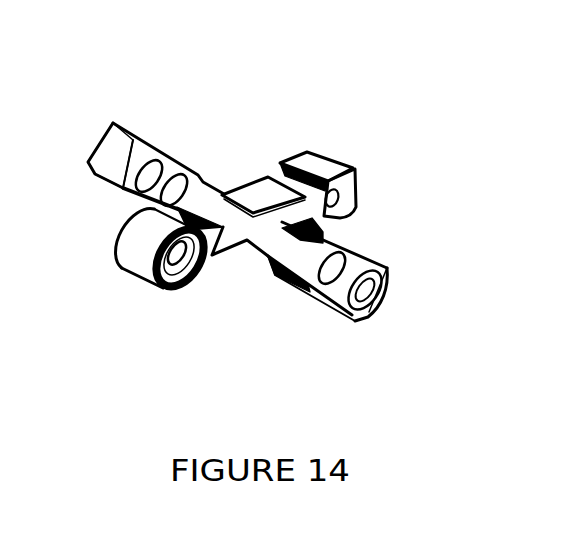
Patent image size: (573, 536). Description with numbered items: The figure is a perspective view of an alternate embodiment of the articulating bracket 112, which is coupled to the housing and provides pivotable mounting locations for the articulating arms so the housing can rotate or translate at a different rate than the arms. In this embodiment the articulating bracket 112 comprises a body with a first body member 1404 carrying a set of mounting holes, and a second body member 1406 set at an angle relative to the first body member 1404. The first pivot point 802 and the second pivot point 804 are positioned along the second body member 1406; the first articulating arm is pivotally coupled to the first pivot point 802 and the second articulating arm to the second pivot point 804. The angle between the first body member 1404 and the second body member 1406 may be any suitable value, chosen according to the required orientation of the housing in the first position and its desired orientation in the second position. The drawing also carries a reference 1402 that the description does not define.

The elongated arm of cross bracket 1402 is at (180, 143).
The first body member 1404 is at (112, 141).
The second body member 1406 is at (267, 194).
The articulating bracket 112 is at (314, 158).
The first pivot point 802 is at (360, 196).
The second pivot point 804 is at (185, 292).